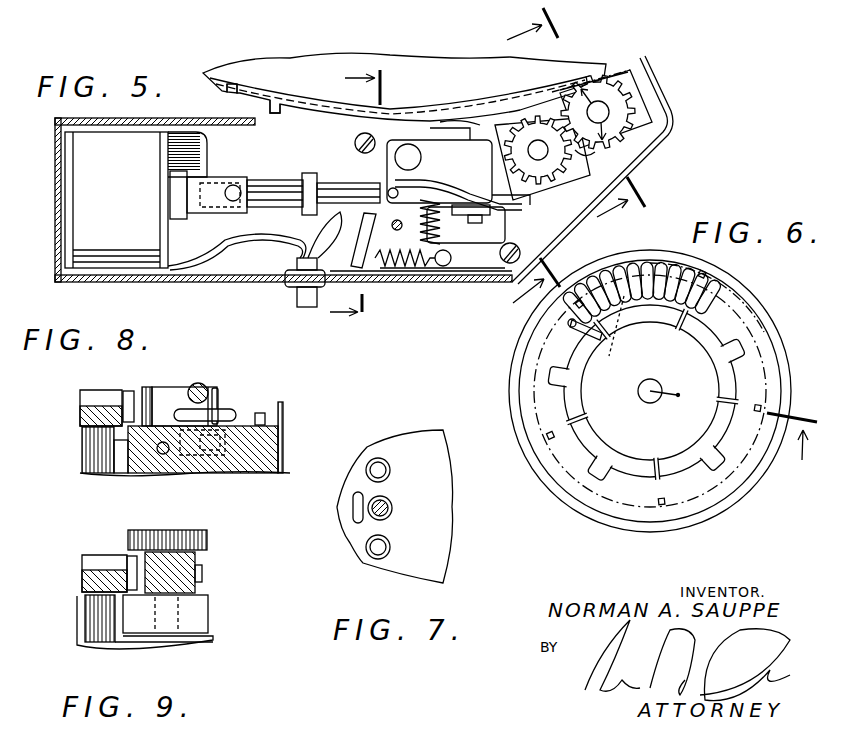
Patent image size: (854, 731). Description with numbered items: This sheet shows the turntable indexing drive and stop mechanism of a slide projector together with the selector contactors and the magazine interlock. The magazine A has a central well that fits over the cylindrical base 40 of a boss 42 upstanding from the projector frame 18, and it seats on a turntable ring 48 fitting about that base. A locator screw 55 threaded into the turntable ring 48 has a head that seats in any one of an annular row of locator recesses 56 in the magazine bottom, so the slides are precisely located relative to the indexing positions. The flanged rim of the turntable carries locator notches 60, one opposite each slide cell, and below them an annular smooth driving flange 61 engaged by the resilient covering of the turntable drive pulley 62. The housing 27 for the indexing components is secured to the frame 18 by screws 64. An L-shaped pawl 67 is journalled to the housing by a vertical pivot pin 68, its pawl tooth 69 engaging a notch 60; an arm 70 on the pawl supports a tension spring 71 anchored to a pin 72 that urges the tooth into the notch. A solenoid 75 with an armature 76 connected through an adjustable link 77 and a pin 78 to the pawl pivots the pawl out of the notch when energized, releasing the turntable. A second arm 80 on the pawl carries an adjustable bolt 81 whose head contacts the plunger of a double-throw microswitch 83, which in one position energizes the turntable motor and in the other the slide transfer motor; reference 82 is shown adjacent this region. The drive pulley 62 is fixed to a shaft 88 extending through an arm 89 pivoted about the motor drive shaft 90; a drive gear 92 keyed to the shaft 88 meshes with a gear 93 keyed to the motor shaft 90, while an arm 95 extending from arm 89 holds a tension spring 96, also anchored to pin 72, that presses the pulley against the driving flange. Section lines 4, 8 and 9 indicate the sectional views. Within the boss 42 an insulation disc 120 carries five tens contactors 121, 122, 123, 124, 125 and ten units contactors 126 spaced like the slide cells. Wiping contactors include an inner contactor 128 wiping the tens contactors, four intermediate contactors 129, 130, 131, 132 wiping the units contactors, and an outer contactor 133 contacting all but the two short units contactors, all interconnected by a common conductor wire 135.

In FIG. 5, the section line 4- 4 is at (531, 290).
In FIG. 6, the section line 4- 4 is at (792, 448).
In FIG. 5, the section line 8- 8 is at (345, 207).
In FIG. 5, the section line 9- 9 is at (587, 112).
In FIG. 8, the projector frame 18 is at (177, 480).
In FIG. 9, the projector frame 18 is at (165, 655).
In FIG. 5, the housing 27 is at (228, 282).
In FIG. 8, the housing 27 is at (284, 410).
In FIG. 6, the cylindrical base 40 is at (775, 330).
In FIG. 8, the cylindrical base 40 is at (85, 455).
In FIG. 9, the cylindrical base 40 is at (95, 650).
In FIG. 6, the boss 42 is at (518, 378).
In FIG. 5, the turntable ring 48 is at (320, 68).
In FIG. 8, the turntable ring 48 is at (80, 393).
In FIG. 9, the turntable ring 48 is at (82, 585).
In FIG. 7, the locator screw 55 is at (390, 509).
In FIG. 7, the locator recess 56 is at (386, 464).
In FIG. 5, the locator notches 60 is at (274, 108).
In FIG. 8, the locator notches 60 is at (127, 392).
In FIG. 9, the locator notches 60 is at (128, 560).
In FIG. 5, the driving flange 61 is at (556, 63).
In FIG. 8, the driving flange 61 is at (108, 472).
In FIG. 9, the driving flange 61 is at (115, 616).
In FIG. 5, the turntable drive pulley 62 is at (627, 148).
In FIG. 9, the turntable drive pulley 62 is at (208, 598).
In FIG. 5, the screws 64 is at (355, 146).
In FIG. 5, the pawl 67 is at (425, 140).
In FIG. 8, the pawl 67 is at (160, 385).
In FIG. 5, the pivot pin 68 is at (405, 145).
In FIG. 8, the pivot pin 68 is at (203, 380).
In FIG. 5, the pawl tooth 69 is at (467, 128).
In FIG. 8, the pawl tooth 69 is at (147, 388).
In FIG. 5, the arm 70 is at (362, 235).
In FIG. 8, the arm 70 is at (235, 410).
In FIG. 5, the tension spring 71 is at (397, 280).
In FIG. 5, the pin 72 is at (443, 270).
In FIG. 8, the pin 72 is at (265, 428).
In FIG. 5, the solenoid 75 is at (136, 200).
In FIG. 5, the armature 76 is at (200, 178).
In FIG. 5, the link 77 is at (272, 184).
In FIG. 8, the link 77 is at (222, 392).
In FIG. 5, the pin 78 is at (388, 192).
In FIG. 5, the arm 80 is at (452, 258).
In FIG. 8, the arm 80 is at (222, 395).
In FIG. 5, the adjustable bolt 81 is at (470, 222).
In FIG. 8, the adjustable bolt 81 is at (215, 465).
In FIG. 8, the hole 82 is at (195, 470).
In FIG. 5, the microswitch 83 is at (498, 172).
In FIG. 8, the microswitch 83 is at (160, 455).
In FIG. 5, the shaft 88 is at (609, 109).
In FIG. 9, the shaft 88 is at (190, 616).
In FIG. 5, the arm 89 is at (644, 117).
In FIG. 9, the arm 89 is at (180, 568).
In FIG. 5, the motor drive shaft 90 is at (581, 158).
In FIG. 5, the drive gear 92 is at (631, 90).
In FIG. 9, the drive gear 92 is at (207, 540).
In FIG. 5, the gear 93 is at (545, 167).
In FIG. 5, the arm 95 is at (513, 202).
In FIG. 5, the tension spring 96 is at (422, 214).
In FIG. 6, the insulation disc 120 is at (745, 468).
In FIG. 6, the tens contactor 121 is at (658, 312).
In FIG. 6, the tens contactor 122 is at (713, 342).
In FIG. 6, the tens contactor 123 is at (688, 443).
In FIG. 6, the tens contactor 124 is at (603, 443).
In FIG. 6, the tens contactor 125 is at (575, 400).
In FIG. 6, the units contactors 126 is at (571, 277).
In FIG. 6, the inner contactor 128 is at (641, 384).
In FIG. 6, the intermediate contactor 129 is at (572, 321).
In FIG. 6, the intermediate contactor 130 is at (757, 410).
In FIG. 6, the intermediate contactor 131 is at (663, 505).
In FIG. 6, the intermediate contactor 132 is at (546, 440).
In FIG. 6, the outer contactor 133 is at (703, 276).
In FIG. 6, the common conductor wire 135 is at (742, 296).
In FIG. 7, the magazine A is at (447, 505).